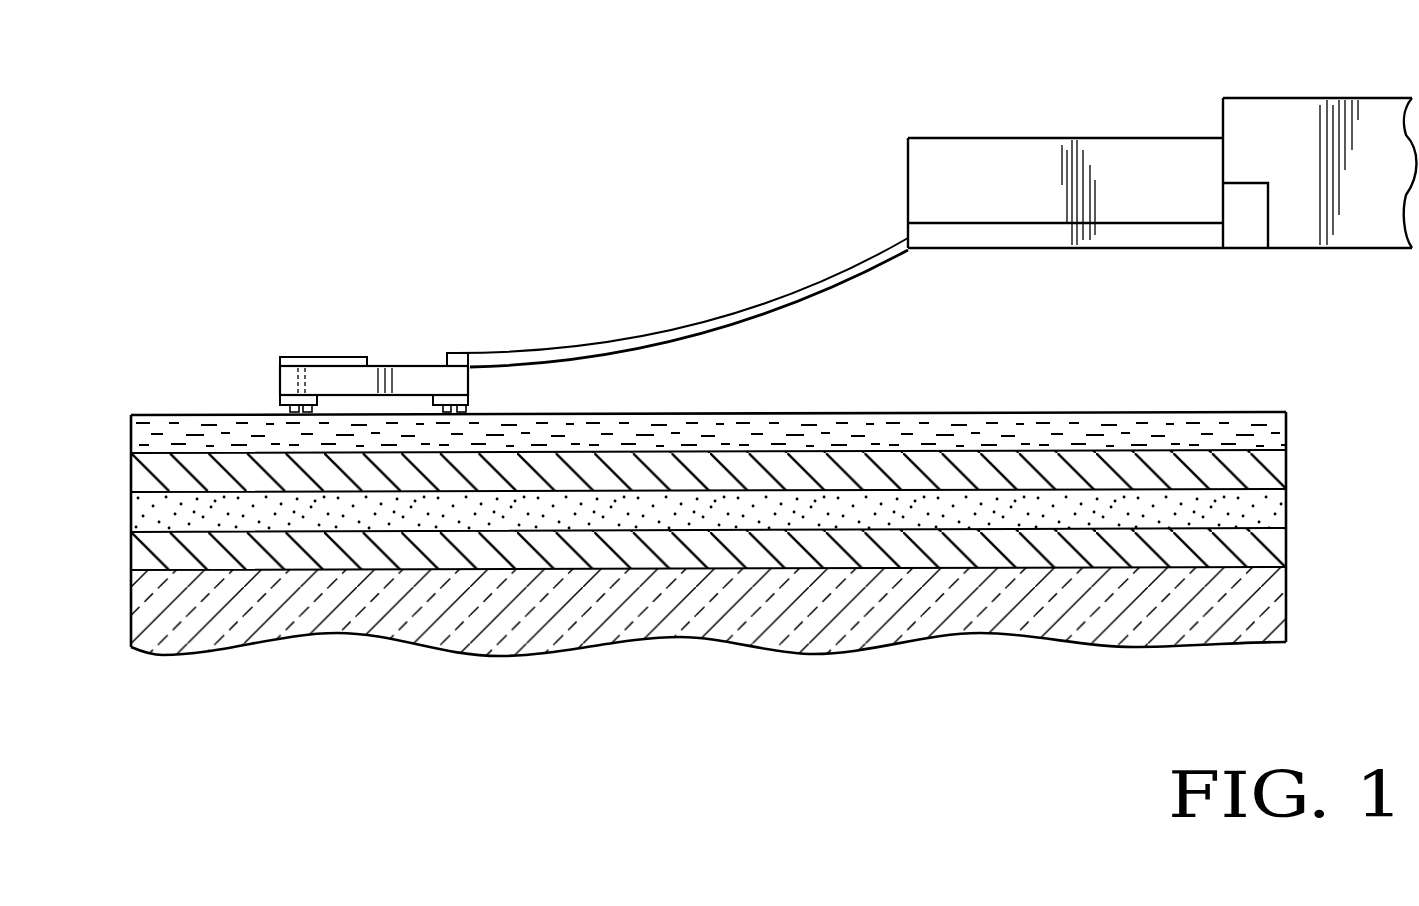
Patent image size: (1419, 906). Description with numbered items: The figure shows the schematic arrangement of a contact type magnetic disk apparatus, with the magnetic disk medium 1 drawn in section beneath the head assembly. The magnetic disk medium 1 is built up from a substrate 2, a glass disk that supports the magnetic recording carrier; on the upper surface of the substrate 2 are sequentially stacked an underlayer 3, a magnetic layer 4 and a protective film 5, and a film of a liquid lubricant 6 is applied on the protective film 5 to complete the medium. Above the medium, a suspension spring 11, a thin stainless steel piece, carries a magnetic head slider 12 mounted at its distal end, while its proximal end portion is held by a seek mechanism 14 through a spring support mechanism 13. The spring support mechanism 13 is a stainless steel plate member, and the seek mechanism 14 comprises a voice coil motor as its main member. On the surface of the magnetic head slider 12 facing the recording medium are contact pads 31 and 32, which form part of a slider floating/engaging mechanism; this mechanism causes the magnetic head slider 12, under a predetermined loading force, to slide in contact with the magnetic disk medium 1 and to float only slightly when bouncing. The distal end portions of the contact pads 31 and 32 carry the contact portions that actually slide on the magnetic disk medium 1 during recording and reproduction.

The magnetic disk medium 1 is at (762, 535).
The substrate 2 is at (523, 655).
The underlayer 3 is at (680, 556).
The magnetic layer 4 is at (958, 517).
The protective film 5 is at (1006, 460).
The liquid lubricant 6 is at (1224, 432).
The suspension spring 11 is at (606, 352).
The magnetic head slider 12 is at (373, 346).
The spring support mechanism 13 is at (965, 156).
The seek mechanism 14 is at (1318, 116).
The contact pad 31 is at (281, 404).
The contact pad 32 is at (470, 404).